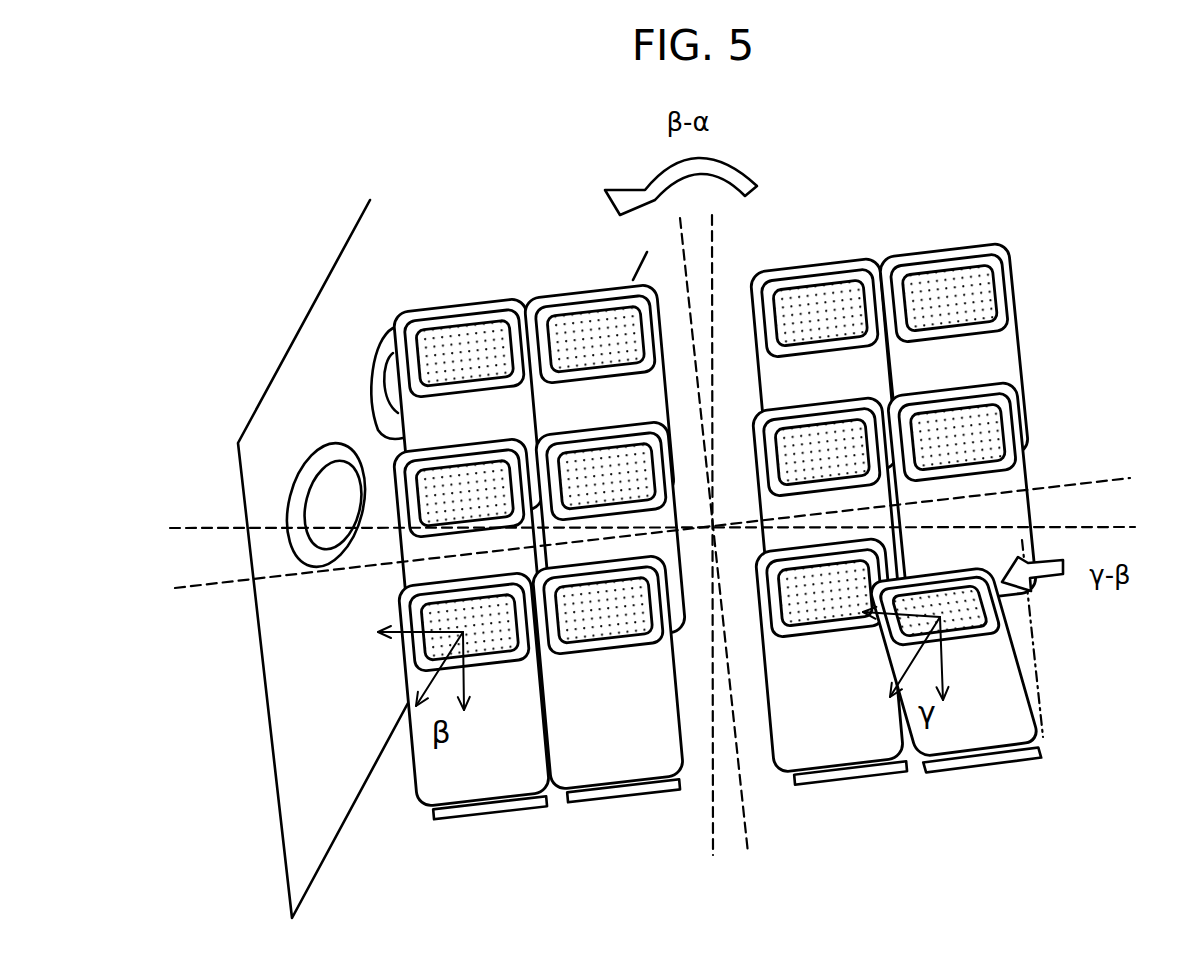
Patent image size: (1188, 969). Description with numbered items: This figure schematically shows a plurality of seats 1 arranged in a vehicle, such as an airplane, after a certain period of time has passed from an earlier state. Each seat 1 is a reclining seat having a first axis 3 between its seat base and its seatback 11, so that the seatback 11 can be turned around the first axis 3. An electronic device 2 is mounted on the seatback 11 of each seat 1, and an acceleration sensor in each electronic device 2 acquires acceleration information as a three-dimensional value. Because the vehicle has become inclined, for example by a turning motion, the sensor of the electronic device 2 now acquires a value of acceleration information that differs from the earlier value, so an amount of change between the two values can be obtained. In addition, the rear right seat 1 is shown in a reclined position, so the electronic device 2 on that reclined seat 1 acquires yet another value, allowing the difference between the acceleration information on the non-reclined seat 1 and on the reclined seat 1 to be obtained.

The seat 1 is at (703, 559).
The seatback 11 is at (417, 763).
The electronic device 2 is at (505, 668).
The first axis 3 is at (457, 817).